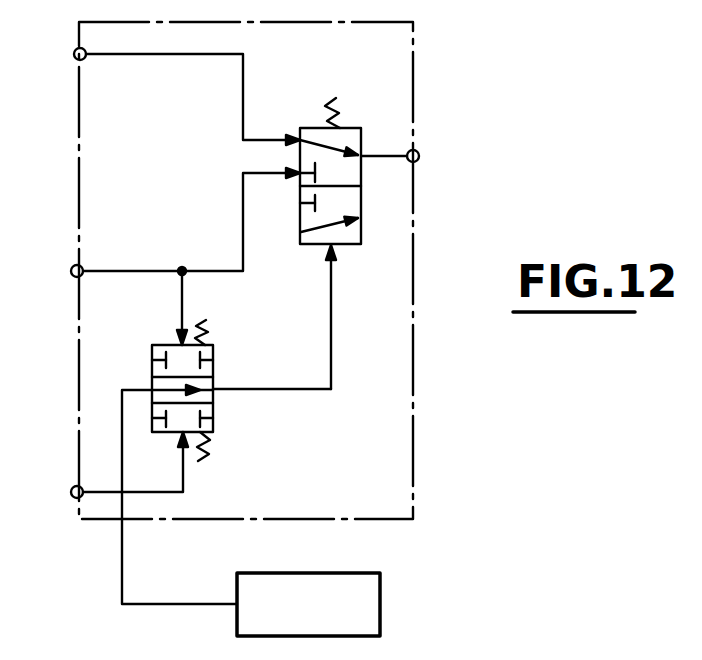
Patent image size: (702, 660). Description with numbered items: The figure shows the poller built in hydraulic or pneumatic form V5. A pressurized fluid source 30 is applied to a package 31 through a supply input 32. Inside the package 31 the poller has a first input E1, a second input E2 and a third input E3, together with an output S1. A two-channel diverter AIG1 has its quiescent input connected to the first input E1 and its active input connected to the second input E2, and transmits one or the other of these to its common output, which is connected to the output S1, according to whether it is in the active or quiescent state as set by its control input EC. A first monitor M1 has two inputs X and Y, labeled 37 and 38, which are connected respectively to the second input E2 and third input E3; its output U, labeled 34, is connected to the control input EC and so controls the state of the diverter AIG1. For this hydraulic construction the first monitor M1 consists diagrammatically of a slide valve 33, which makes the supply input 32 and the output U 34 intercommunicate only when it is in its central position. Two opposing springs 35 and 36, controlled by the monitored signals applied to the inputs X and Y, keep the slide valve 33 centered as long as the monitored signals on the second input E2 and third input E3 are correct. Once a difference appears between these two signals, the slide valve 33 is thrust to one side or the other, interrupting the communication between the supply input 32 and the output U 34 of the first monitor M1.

The pressurized fluid source 30 is at (368, 605).
The package 31 is at (413, 418).
The supply input 32 is at (123, 528).
The slide valve 33 is at (165, 385).
The output U 34 is at (220, 385).
The spring 35 is at (212, 318).
The spring 36 is at (210, 455).
The input X 37 is at (175, 342).
The input Y 38 is at (180, 440).
The first input E1 is at (74, 54).
The second input E2 is at (71, 271).
The third input E3 is at (71, 492).
The output S1 is at (419, 156).
The two-channel diverter AIG1 is at (308, 135).
The control input EC is at (332, 275).
The monitor input X is at (185, 297).
The monitor input Y is at (185, 488).
The monitor output U is at (292, 393).
The first monitor M1 is at (213, 410).
The hydraulic poller V5 is at (393, 485).